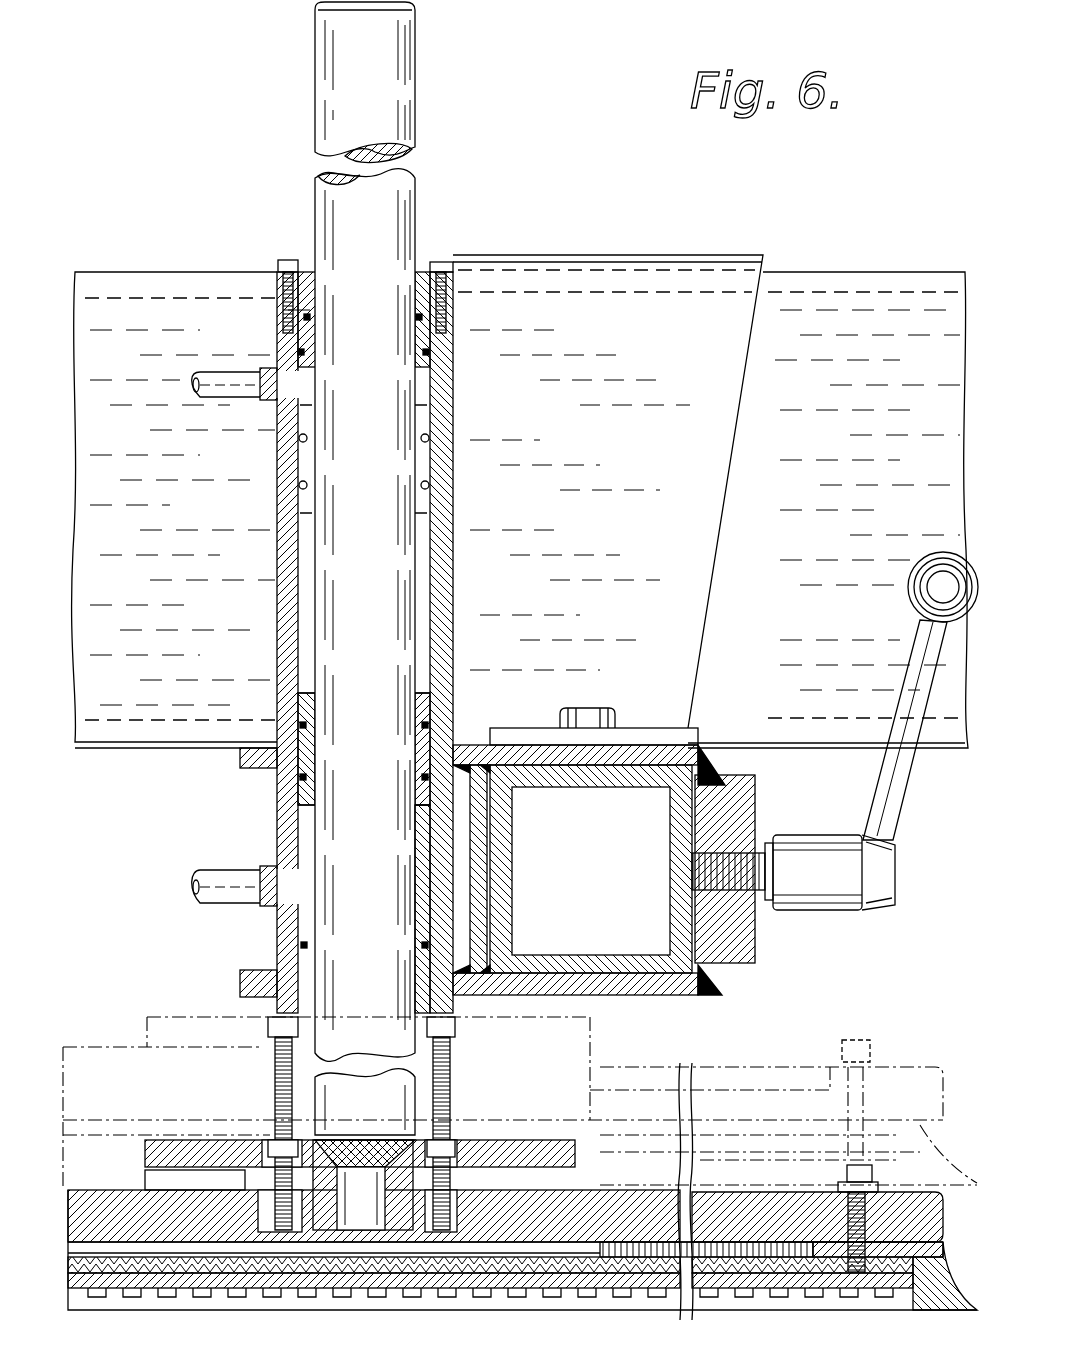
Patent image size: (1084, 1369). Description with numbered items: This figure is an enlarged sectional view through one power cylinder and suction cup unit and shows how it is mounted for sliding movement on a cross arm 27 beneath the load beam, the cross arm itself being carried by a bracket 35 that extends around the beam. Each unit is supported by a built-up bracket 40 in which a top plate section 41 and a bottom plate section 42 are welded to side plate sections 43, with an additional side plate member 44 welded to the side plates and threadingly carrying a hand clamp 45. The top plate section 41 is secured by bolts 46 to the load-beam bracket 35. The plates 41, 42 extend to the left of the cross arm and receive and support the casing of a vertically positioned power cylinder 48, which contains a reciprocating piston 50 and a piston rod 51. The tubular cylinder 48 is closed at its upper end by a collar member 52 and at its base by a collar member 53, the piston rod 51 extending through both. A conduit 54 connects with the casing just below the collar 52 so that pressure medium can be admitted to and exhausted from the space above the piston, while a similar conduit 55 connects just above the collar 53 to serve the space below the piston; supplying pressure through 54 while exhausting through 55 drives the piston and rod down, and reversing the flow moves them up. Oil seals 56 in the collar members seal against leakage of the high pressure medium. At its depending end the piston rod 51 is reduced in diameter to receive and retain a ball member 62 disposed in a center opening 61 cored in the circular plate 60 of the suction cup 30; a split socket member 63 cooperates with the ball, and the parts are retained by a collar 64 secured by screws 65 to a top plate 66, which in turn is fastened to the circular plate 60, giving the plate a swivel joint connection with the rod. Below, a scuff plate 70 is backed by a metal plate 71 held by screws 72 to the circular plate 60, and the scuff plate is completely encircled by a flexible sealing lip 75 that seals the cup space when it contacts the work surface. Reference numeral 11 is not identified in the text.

The container 11 is at (146, 330).
The bracket 35 is at (677, 481).
The power cylinder 48 is at (264, 603).
The collar member 52 is at (437, 283).
The piston 50 is at (294, 694).
The oil seals 56 is at (298, 725).
The piston rod 51 is at (396, 578).
The conduit 54 is at (226, 385).
The conduit 55 is at (222, 882).
The top plate section 41 is at (650, 752).
The bottom plate section 42 is at (240, 985).
The built-up bracket 40 is at (523, 740).
The bolts 46 is at (594, 717).
The side plate sections 43 is at (478, 834).
The collar member 53 is at (428, 905).
The side plate member 44 is at (736, 822).
The cross arm 27 is at (690, 898).
The hand clamp 45 is at (928, 650).
The collar 64 is at (437, 1192).
The circular plate 60 is at (752, 1197).
The center opening 61 is at (476, 1228).
The top plate 66 is at (243, 1157).
The split socket member 63 is at (308, 1215).
The screws 65 is at (447, 1170).
The ball member 62 is at (393, 1213).
The suction cup 30 is at (462, 1296).
The metal plate 71 is at (788, 1263).
The scuff plate 70 is at (710, 1290).
The flexible sealing lip 75 is at (945, 1290).
The screws 72 is at (863, 1170).